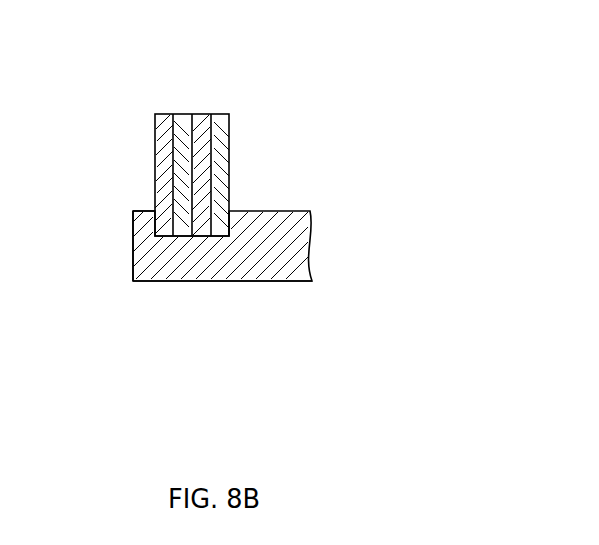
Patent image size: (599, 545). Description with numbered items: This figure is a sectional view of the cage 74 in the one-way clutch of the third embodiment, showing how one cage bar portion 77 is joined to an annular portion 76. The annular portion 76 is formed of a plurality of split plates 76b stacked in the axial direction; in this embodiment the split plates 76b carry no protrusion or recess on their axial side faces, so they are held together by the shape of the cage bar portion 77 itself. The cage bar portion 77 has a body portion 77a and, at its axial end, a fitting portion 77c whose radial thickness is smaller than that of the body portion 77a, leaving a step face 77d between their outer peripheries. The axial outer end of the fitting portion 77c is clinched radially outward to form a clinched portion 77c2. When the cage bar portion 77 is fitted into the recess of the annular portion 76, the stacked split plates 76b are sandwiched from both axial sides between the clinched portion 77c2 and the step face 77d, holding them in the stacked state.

The cage 74 is at (297, 90).
The annular portion 76 is at (235, 140).
The split plate 76b is at (163, 113).
The cage bar portion 77 is at (203, 283).
The body portion 77a is at (275, 273).
The fitting portion 77c is at (145, 252).
The clinched portion 77c2 is at (139, 212).
The step face 77d is at (233, 214).